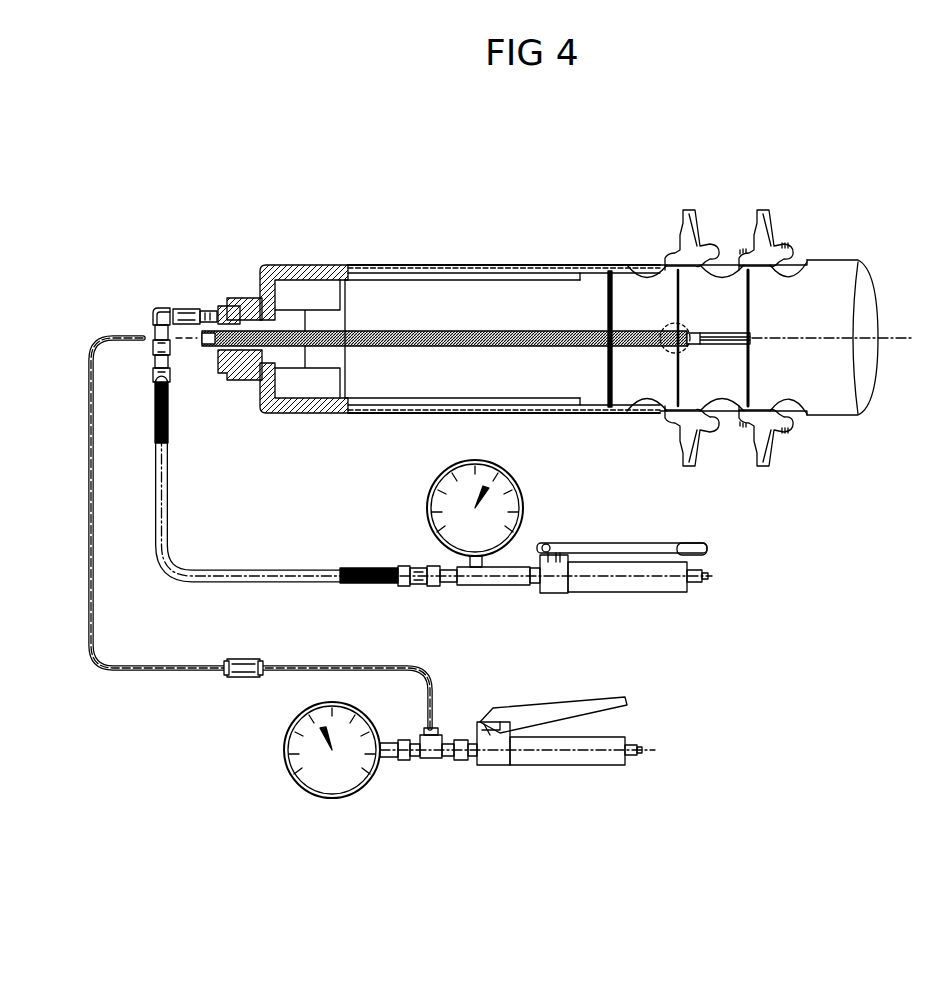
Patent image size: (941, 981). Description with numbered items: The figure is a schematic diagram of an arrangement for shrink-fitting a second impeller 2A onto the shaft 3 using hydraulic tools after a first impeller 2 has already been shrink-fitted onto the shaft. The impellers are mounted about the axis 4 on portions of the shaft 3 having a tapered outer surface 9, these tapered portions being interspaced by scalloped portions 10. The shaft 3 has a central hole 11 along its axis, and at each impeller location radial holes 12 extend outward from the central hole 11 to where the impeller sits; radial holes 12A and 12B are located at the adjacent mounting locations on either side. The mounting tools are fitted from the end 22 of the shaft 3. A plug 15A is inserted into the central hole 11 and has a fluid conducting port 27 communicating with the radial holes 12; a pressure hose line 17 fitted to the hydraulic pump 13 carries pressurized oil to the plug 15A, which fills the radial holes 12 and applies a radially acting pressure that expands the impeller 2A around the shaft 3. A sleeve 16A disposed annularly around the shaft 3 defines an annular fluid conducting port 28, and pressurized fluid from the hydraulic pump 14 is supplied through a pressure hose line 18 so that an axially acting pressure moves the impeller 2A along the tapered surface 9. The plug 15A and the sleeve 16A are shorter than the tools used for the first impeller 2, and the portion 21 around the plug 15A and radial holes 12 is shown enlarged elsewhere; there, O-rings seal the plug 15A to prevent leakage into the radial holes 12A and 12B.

The impeller wheel 2 is at (785, 206).
The second impeller 2A is at (687, 200).
The shaft 3 is at (375, 414).
The axis 4 is at (868, 296).
The tapered outer surface 9 is at (587, 264).
The scalloped portions 10 is at (645, 264).
The central hole 11 is at (729, 335).
The radial holes 12 is at (680, 296).
The radial holes 12A is at (753, 324).
The radial holes 12B is at (606, 302).
The hydraulic pump 13 is at (554, 778).
The hydraulic pump 14 is at (630, 602).
The plug 15A is at (442, 346).
The sleeve 16A is at (312, 263).
The pressure hose line 17 is at (88, 514).
The pressure hose line 18 is at (168, 492).
The portion 21 is at (662, 322).
The end of the shaft 22 is at (237, 282).
The fluid conducting port 27 is at (468, 331).
The annular fluid conducting port 28 is at (419, 264).